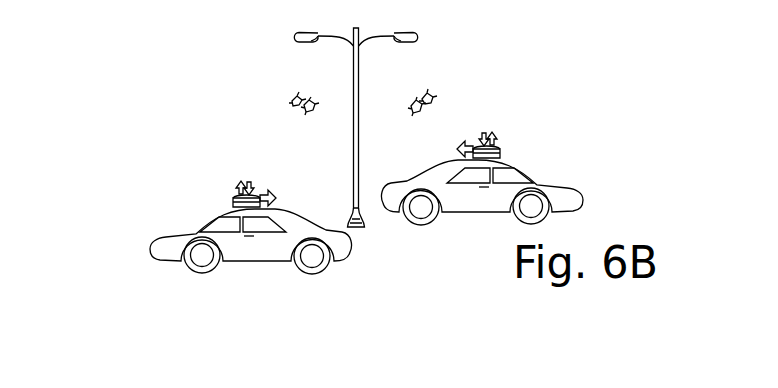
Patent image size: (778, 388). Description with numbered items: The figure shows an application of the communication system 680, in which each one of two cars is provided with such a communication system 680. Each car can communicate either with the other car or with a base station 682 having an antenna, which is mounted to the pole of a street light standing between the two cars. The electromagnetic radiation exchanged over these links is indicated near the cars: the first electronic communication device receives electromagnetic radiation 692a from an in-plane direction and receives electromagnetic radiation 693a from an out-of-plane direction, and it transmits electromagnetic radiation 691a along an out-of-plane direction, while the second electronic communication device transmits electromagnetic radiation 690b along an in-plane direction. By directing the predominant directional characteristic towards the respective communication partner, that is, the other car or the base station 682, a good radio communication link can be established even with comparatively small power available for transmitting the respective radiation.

The communication system 680 is at (224, 195).
The base station 682 is at (292, 37).
The electromagnetic radiation 690b is at (350, 76).
The electromagnetic radiation 691a is at (291, 103).
The electromagnetic radiation 692a is at (362, 86).
The electromagnetic radiation 693a is at (318, 110).